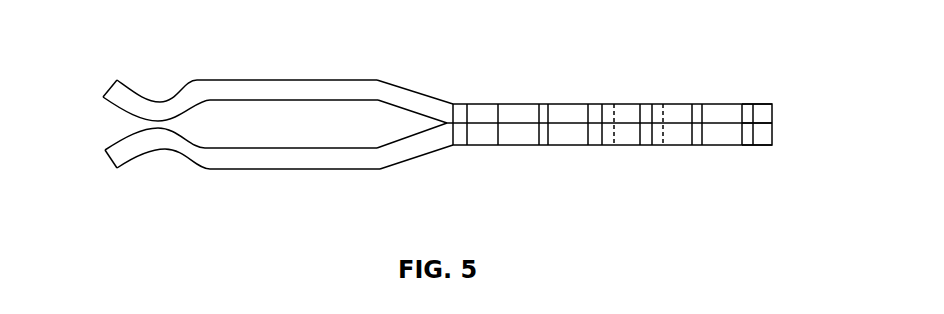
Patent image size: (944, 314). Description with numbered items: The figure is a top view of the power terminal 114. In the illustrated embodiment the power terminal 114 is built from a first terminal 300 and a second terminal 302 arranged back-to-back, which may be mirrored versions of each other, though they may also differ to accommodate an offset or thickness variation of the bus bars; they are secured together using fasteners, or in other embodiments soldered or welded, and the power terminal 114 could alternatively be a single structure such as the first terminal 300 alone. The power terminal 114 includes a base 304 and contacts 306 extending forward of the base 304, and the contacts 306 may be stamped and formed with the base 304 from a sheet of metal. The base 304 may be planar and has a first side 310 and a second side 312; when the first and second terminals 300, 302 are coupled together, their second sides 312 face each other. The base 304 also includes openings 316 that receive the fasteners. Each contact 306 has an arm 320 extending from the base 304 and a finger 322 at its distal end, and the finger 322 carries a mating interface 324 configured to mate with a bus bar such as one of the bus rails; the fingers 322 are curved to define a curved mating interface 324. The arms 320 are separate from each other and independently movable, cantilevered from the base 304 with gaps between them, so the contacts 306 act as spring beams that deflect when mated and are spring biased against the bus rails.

The power terminal 114 is at (569, 31).
The first terminal 300 is at (678, 135).
The second terminal 302 is at (678, 110).
The base 304 is at (728, 135).
The contacts 306 is at (302, 170).
The first side 310 is at (745, 145).
The second side 312 is at (757, 123).
The openings 316 is at (627, 148).
The arm 320 is at (373, 170).
The finger 322 is at (175, 143).
The mating interface 324 is at (140, 125).